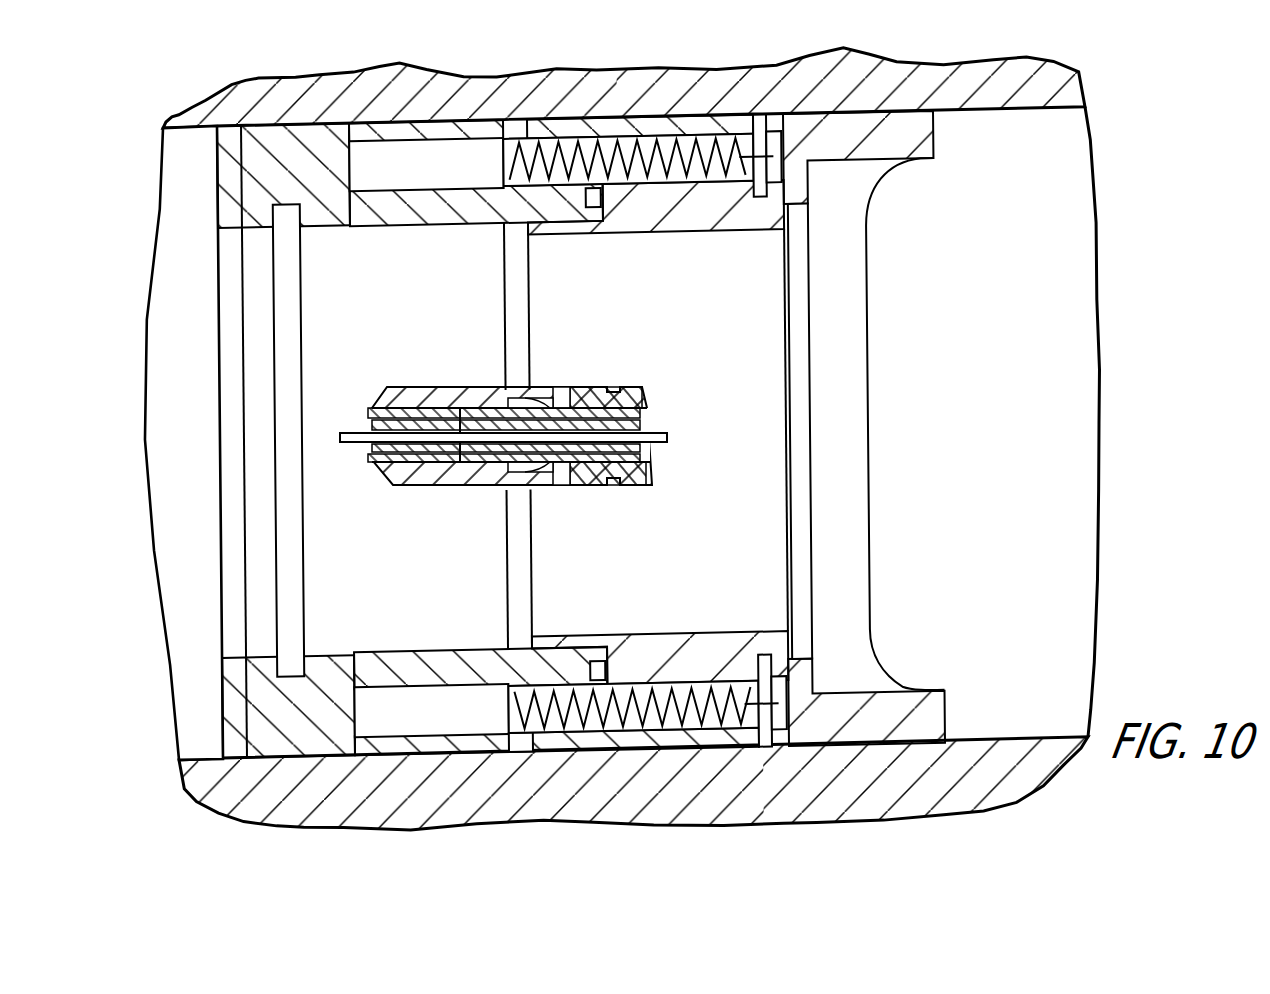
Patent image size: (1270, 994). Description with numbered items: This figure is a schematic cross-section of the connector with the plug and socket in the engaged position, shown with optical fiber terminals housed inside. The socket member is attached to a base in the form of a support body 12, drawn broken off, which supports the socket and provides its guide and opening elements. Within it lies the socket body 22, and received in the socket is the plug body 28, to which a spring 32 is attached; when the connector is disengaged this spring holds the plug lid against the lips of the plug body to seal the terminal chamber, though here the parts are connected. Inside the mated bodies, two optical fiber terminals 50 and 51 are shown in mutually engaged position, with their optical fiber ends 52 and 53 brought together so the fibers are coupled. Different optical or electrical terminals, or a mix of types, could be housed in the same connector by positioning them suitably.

The support body 12 is at (418, 840).
The socket body 22 is at (350, 665).
The plug body 28 is at (922, 135).
The spring 32 is at (632, 150).
The optical fiber terminal 50 is at (652, 478).
The optical fiber terminal 51 is at (387, 388).
The optical fiber end 52 is at (353, 444).
The optical fiber end 53 is at (662, 428).